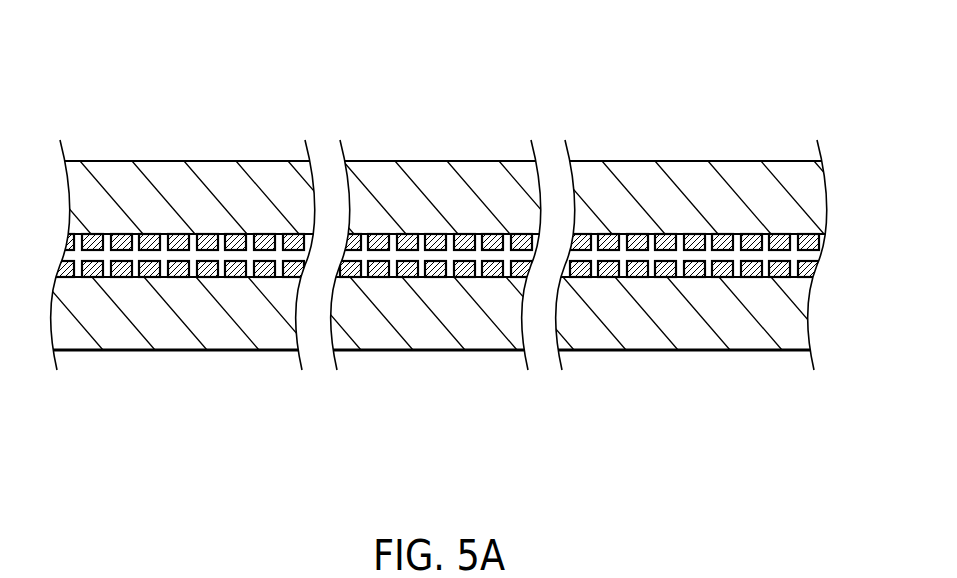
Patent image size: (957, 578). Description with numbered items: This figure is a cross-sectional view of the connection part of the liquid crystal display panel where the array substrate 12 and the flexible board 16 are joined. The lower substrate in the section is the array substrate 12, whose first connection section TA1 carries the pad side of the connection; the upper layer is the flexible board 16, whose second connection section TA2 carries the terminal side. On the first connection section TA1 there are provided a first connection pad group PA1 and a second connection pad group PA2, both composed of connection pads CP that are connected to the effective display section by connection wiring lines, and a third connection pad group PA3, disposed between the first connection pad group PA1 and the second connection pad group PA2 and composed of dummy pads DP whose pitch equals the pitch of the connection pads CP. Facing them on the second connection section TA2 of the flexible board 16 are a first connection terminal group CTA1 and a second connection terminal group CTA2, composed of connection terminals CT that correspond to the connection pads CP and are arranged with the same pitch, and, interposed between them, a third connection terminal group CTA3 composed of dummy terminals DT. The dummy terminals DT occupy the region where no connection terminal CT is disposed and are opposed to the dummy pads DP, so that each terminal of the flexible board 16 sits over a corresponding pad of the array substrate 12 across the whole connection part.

The flexible board 16 is at (478, 179).
The array substrate 12 is at (478, 335).
The connection terminal CT is at (156, 232).
The dummy terminal DT is at (437, 232).
The connection pad CP is at (148, 279).
The dummy pad DP is at (428, 279).
The first connection terminal group CTA1 is at (307, 122).
The second connection terminal group CTA2 is at (817, 122).
The third connection terminal group CTA3 is at (532, 122).
The first connection pad group PA1 is at (305, 387).
The second connection pad group PA2 is at (817, 387).
The third connection pad group PA3 is at (530, 387).
The first connection section TA1 is at (817, 452).
The second connection section TA2 is at (817, 62).